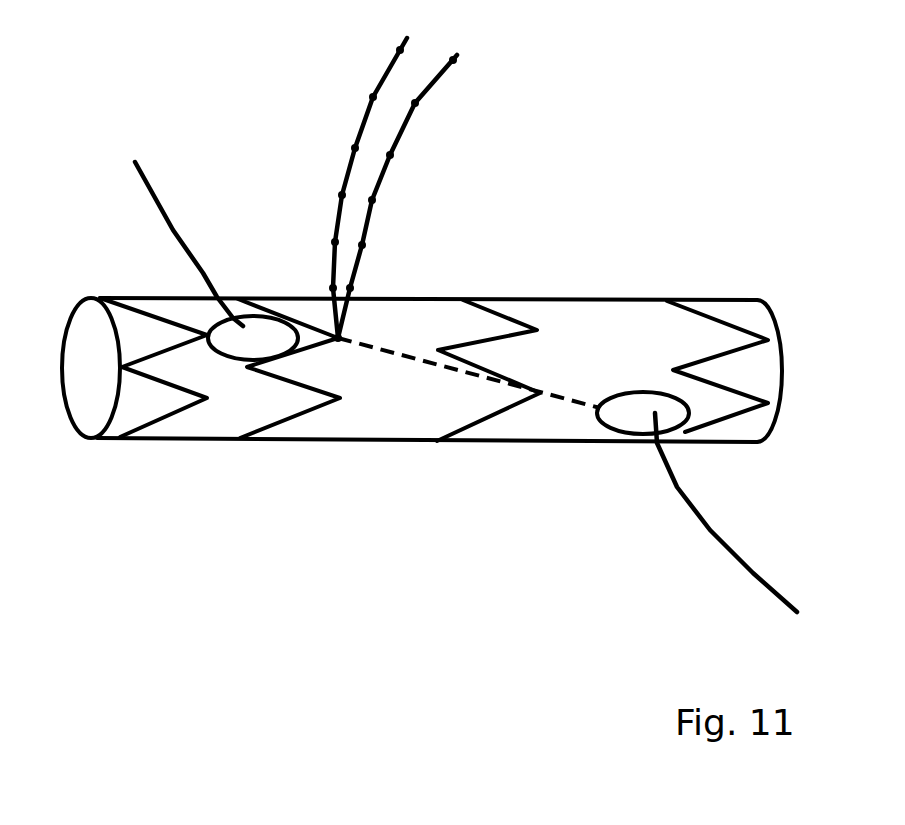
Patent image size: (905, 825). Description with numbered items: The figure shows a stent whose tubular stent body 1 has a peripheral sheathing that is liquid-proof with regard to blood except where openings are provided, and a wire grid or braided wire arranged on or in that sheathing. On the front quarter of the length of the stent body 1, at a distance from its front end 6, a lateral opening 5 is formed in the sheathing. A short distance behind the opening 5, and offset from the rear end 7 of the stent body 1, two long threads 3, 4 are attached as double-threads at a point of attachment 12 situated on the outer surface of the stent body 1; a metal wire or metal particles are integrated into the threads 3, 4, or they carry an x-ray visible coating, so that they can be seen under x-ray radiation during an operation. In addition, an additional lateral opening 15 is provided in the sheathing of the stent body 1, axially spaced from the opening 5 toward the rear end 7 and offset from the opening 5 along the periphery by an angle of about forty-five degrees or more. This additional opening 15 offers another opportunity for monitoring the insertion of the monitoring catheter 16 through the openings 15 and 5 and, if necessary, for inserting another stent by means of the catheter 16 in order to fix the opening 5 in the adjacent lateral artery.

The tubular stent body 1 is at (357, 422).
The long thread 3 is at (355, 148).
The long thread 4 is at (383, 173).
The lateral opening 5 is at (233, 338).
The front end 6 is at (137, 410).
The rear end 7 is at (743, 313).
The point of attachment 12 is at (338, 338).
The additional lateral opening 15 is at (657, 413).
The monitoring catheter 16 is at (685, 505).